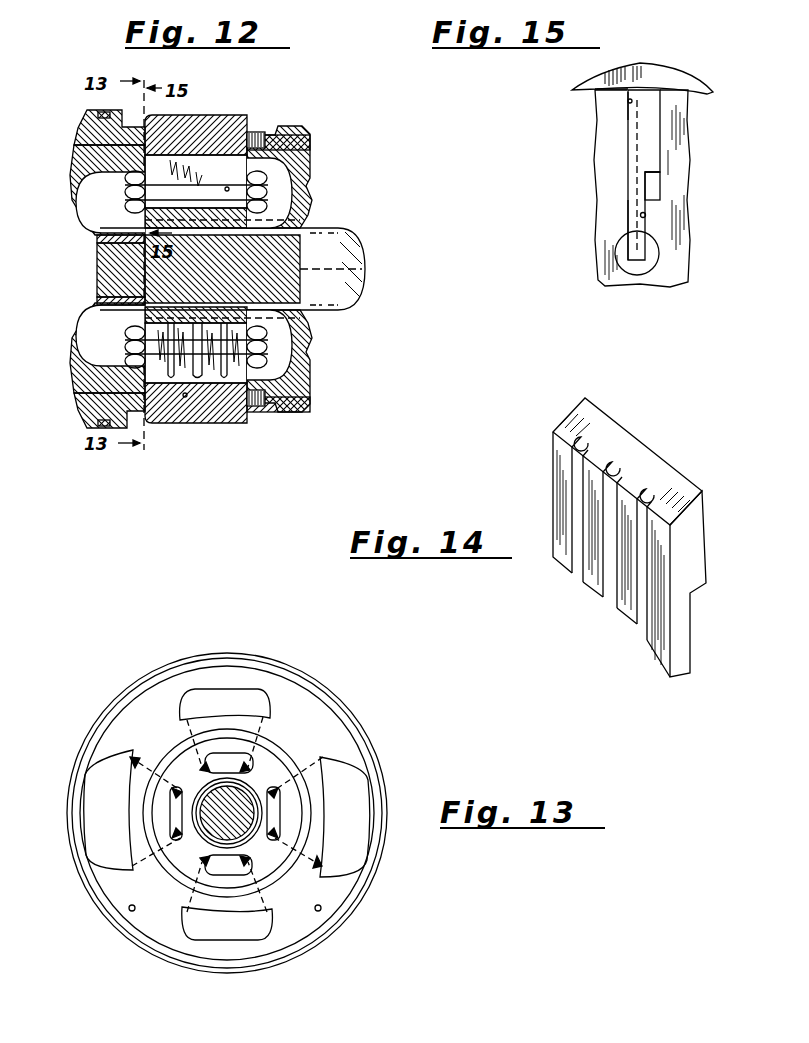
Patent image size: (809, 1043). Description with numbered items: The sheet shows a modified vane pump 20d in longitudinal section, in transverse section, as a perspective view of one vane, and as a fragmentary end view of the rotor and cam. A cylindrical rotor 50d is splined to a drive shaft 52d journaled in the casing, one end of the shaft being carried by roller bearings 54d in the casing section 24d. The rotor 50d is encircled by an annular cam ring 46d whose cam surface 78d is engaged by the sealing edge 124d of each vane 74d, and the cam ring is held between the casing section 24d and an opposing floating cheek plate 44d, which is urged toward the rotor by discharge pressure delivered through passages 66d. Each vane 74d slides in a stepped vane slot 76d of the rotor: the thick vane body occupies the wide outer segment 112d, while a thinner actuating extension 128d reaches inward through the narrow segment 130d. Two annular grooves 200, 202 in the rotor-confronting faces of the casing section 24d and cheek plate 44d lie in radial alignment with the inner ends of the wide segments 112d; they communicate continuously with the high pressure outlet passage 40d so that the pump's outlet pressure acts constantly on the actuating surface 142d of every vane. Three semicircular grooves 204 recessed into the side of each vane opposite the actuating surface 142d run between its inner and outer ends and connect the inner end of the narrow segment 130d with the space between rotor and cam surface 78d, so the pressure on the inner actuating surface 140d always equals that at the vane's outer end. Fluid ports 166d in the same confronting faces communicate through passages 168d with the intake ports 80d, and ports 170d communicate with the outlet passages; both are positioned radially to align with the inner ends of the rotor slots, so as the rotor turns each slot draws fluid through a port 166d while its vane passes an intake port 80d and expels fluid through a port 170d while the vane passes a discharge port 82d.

In FIG. 12, the pump 20d is at (292, 110).
In FIG. 12, the casing section 24d is at (87, 132).
In FIG. 13, the casing section 24d is at (133, 683).
In FIG. 12, the high pressure outlet passage 40d is at (107, 185).
In FIG. 12, the cheek plate 44d is at (303, 385).
In FIG. 12, the cam ring 46d is at (213, 133).
In FIG. 15, the cam ring 46d is at (650, 70).
In FIG. 12, the rotor 50d is at (222, 207).
In FIG. 15, the rotor 50d is at (612, 218).
In FIG. 12, the drive shaft 52d is at (333, 262).
In FIG. 13, the drive shaft 52d is at (218, 827).
In FIG. 12, the roller bearings 54d is at (100, 258).
In FIG. 12, the passages 66d is at (300, 138).
In FIG. 12, the vane 74d is at (160, 166).
In FIG. 15, the vane 74d is at (638, 153).
In FIG. 14, the vane 74d is at (647, 552).
In FIG. 15, the vane slot 76d is at (628, 97).
In FIG. 15, the cam surface 78d is at (595, 90).
In FIG. 13, the intake port 80d is at (90, 798).
In FIG. 12, the discharge port 82d is at (82, 157).
In FIG. 13, the discharge port 82d is at (225, 697).
In FIG. 15, the wide outer segment 112d is at (662, 190).
In FIG. 15, the sealing edge 124d is at (628, 108).
In FIG. 14, the sealing edge 124d is at (658, 450).
In FIG. 15, the actuating extension 128d is at (682, 236).
In FIG. 14, the actuating extension 128d is at (680, 650).
In FIG. 15, the narrow segment 130d is at (646, 217).
In FIG. 15, the inner actuating surface 140d is at (638, 262).
In FIG. 14, the inner actuating surface 140d is at (673, 677).
In FIG. 12, the actuating surface 142d is at (227, 187).
In FIG. 15, the actuating surface 142d is at (655, 178).
In FIG. 14, the actuating surface 142d is at (700, 590).
In FIG. 13, the fluid port 166d is at (173, 828).
In FIG. 13, the passage 168d is at (140, 767).
In FIG. 12, the port 170d is at (147, 218).
In FIG. 13, the port 170d is at (242, 763).
In FIG. 12, the annular groove 200 is at (128, 192).
In FIG. 13, the annular groove 200 is at (267, 745).
In FIG. 12, the annular groove 202 is at (263, 192).
In FIG. 12, the semicircular groove 204 is at (224, 325).
In FIG. 15, the semicircular groove 204 is at (634, 183).
In FIG. 14, the semicircular groove 204 is at (578, 562).